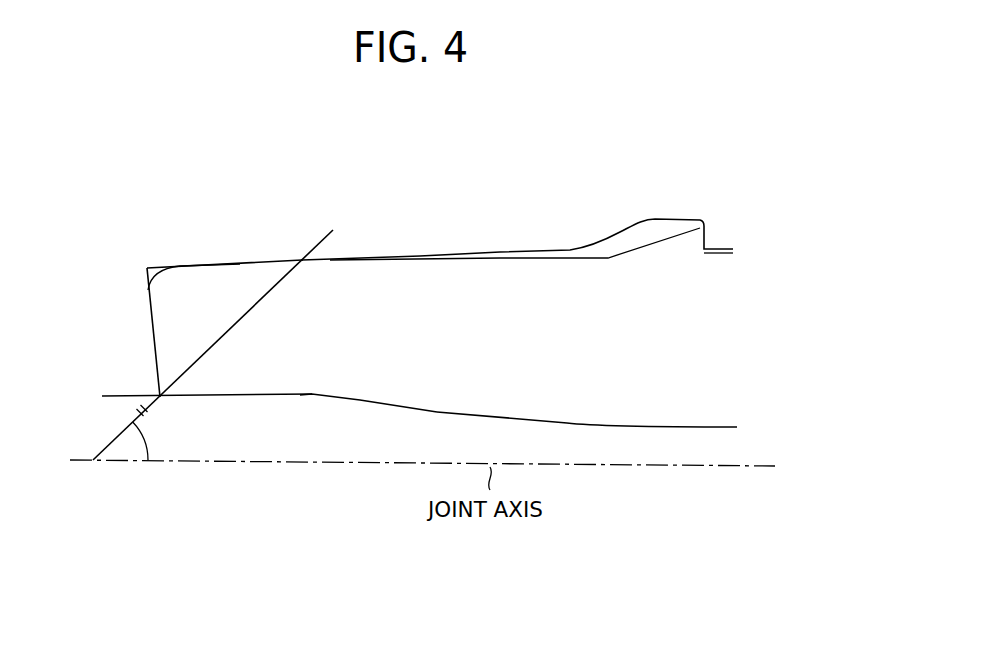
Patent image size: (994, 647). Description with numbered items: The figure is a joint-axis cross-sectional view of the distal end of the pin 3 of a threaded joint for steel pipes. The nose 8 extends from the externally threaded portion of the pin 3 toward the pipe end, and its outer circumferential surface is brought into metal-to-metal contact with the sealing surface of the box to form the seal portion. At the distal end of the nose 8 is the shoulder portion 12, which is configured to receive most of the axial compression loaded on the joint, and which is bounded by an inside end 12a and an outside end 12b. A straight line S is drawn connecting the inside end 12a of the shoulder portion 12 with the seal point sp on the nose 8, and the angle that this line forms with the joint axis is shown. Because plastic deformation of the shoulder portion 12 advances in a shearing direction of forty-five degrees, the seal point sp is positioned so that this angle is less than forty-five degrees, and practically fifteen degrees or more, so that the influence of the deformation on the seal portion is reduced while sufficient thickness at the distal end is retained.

The pin 3 is at (477, 399).
The nose 8 is at (310, 392).
The shoulder portion 12 is at (154, 343).
The inside end of the shoulder portion 12a is at (160, 398).
The outside end of the shoulder portion 12b is at (147, 268).
The straight line S is at (226, 335).
The seal point sp is at (302, 260).